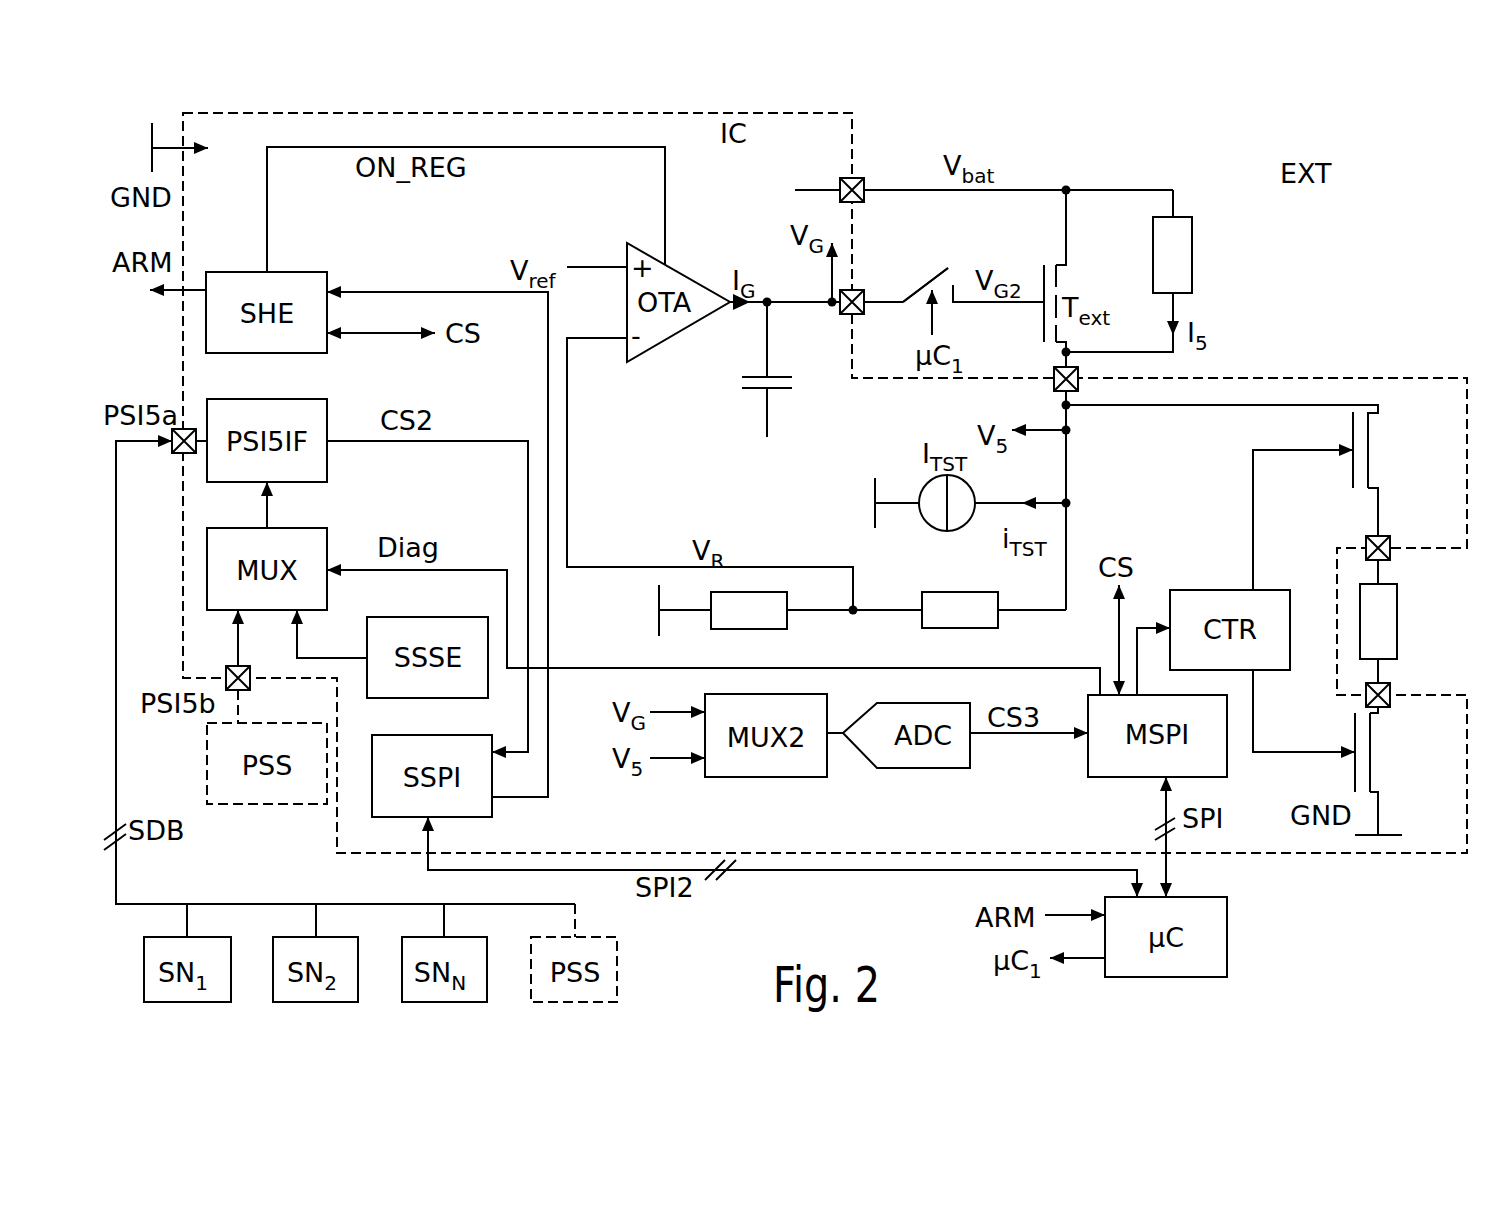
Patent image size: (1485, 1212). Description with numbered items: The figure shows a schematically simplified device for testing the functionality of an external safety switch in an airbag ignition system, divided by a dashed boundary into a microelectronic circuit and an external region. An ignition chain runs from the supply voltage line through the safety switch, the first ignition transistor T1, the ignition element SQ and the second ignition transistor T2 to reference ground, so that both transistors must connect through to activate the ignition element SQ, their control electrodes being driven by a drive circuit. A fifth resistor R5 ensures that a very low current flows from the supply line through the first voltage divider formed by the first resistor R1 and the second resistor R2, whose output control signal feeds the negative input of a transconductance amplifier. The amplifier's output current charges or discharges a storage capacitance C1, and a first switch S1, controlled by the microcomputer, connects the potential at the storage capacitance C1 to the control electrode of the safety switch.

The storage capacitance C1 is at (782, 369).
The first resistor R1 is at (960, 632).
The second resistor R2 is at (749, 632).
The fifth resistor R5 is at (1195, 255).
The first switch S1 is at (928, 269).
The first ignition transistor T1 is at (1391, 450).
The second ignition transistor T2 is at (1389, 752).
The ignition element SQ is at (1402, 621).